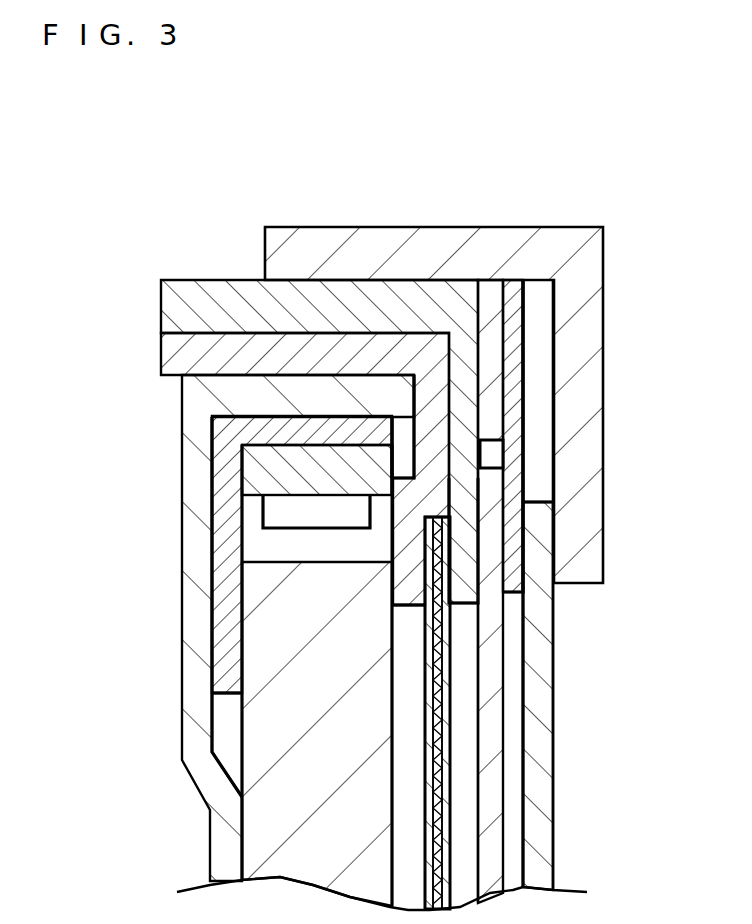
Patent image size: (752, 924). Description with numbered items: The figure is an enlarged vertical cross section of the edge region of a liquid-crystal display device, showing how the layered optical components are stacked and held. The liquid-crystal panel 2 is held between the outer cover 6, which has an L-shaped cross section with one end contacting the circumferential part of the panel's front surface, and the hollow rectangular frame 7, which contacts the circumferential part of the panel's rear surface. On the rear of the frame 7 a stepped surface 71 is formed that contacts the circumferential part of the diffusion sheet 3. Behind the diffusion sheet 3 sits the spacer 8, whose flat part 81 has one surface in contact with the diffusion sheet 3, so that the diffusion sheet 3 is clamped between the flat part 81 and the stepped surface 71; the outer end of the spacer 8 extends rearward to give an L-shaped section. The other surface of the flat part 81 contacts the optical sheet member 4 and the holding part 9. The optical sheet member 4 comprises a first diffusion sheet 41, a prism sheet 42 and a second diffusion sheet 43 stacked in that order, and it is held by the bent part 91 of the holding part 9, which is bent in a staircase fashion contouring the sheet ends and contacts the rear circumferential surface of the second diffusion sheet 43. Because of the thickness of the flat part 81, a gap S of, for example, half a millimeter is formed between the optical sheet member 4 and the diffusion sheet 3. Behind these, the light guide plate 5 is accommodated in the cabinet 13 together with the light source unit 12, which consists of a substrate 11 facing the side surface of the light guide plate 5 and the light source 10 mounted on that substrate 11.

The liquid-crystal panel 2 is at (537, 713).
The diffusion sheet 3 is at (493, 667).
The optical sheet member 4 is at (645, 766).
The first diffusion sheet 41 is at (448, 798).
The prism sheet 42 is at (437, 823).
The second diffusion sheet 43 is at (455, 860).
The gap S is at (467, 755).
The light guide plate 5 is at (270, 727).
The outer cover 6 is at (502, 238).
The frame 7 is at (515, 349).
The stepped surface 71 is at (515, 472).
The spacer 8 is at (215, 287).
The flat part 81 is at (468, 542).
The holding part 9 is at (171, 348).
The bent part 91 is at (408, 550).
The light source 10 is at (270, 516).
The substrate 11 is at (253, 482).
The light source unit 12 is at (99, 436).
The cabinet 13 is at (188, 675).